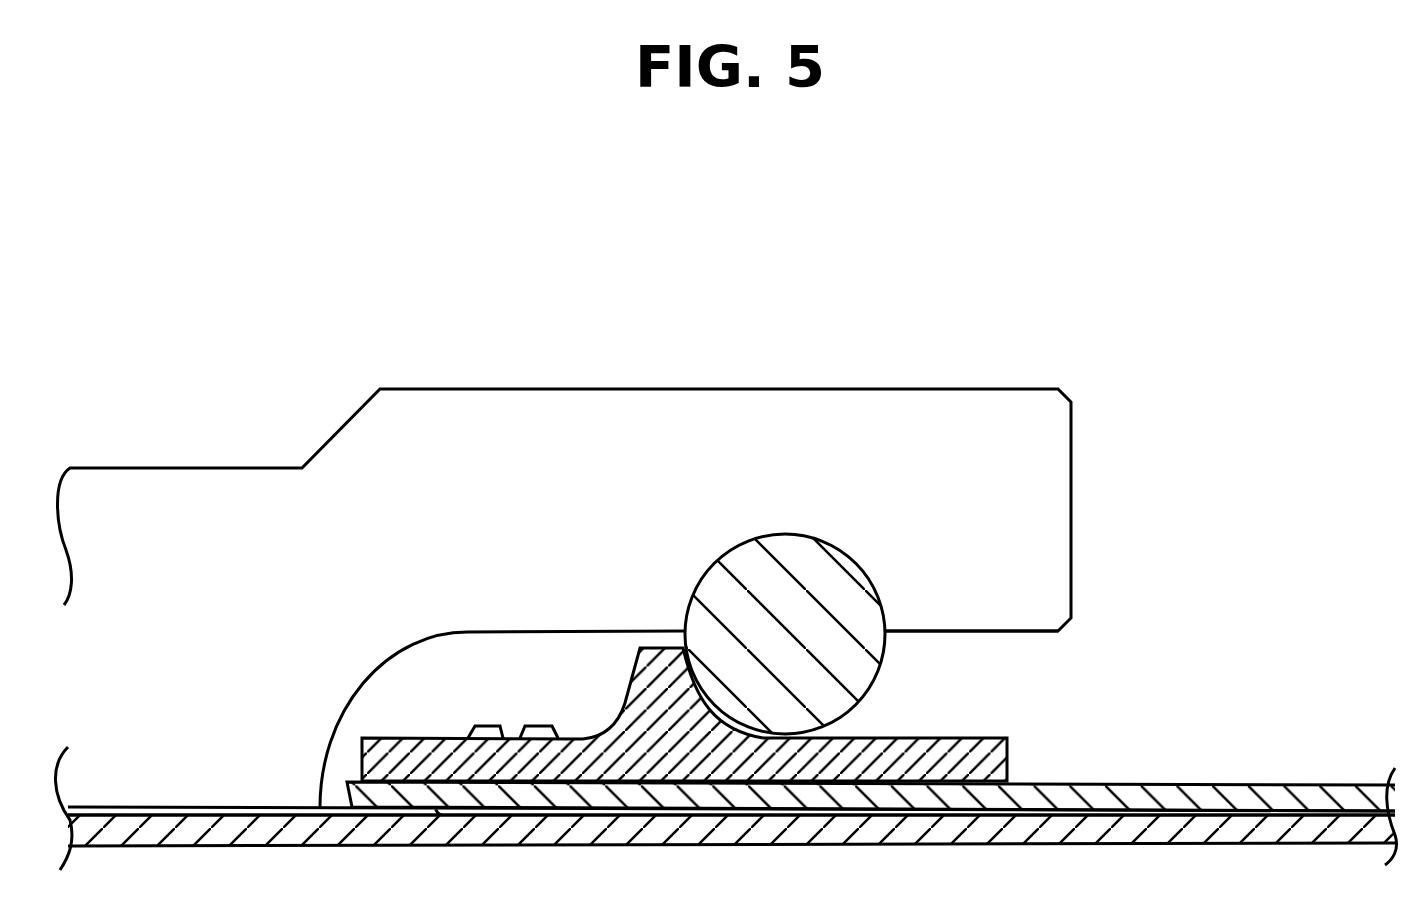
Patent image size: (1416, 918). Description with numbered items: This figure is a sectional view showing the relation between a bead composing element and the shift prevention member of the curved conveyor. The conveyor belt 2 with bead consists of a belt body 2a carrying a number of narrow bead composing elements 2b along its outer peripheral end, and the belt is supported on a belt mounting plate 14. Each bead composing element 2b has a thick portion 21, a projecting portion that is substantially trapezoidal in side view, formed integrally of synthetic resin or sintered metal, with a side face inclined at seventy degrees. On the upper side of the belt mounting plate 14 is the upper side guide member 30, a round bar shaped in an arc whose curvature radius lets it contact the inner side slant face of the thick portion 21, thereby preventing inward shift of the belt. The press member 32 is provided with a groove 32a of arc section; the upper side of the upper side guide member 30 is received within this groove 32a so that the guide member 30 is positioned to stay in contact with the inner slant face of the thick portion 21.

The conveyor belt 2 is at (1328, 515).
The belt body 2a is at (1263, 783).
The bead composing element 2b is at (1007, 750).
The belt mounting plate 14 is at (1143, 797).
The thick portion 21 is at (658, 680).
The upper side guide member 30 is at (780, 593).
The press member 32 is at (613, 423).
The groove 32a is at (822, 567).